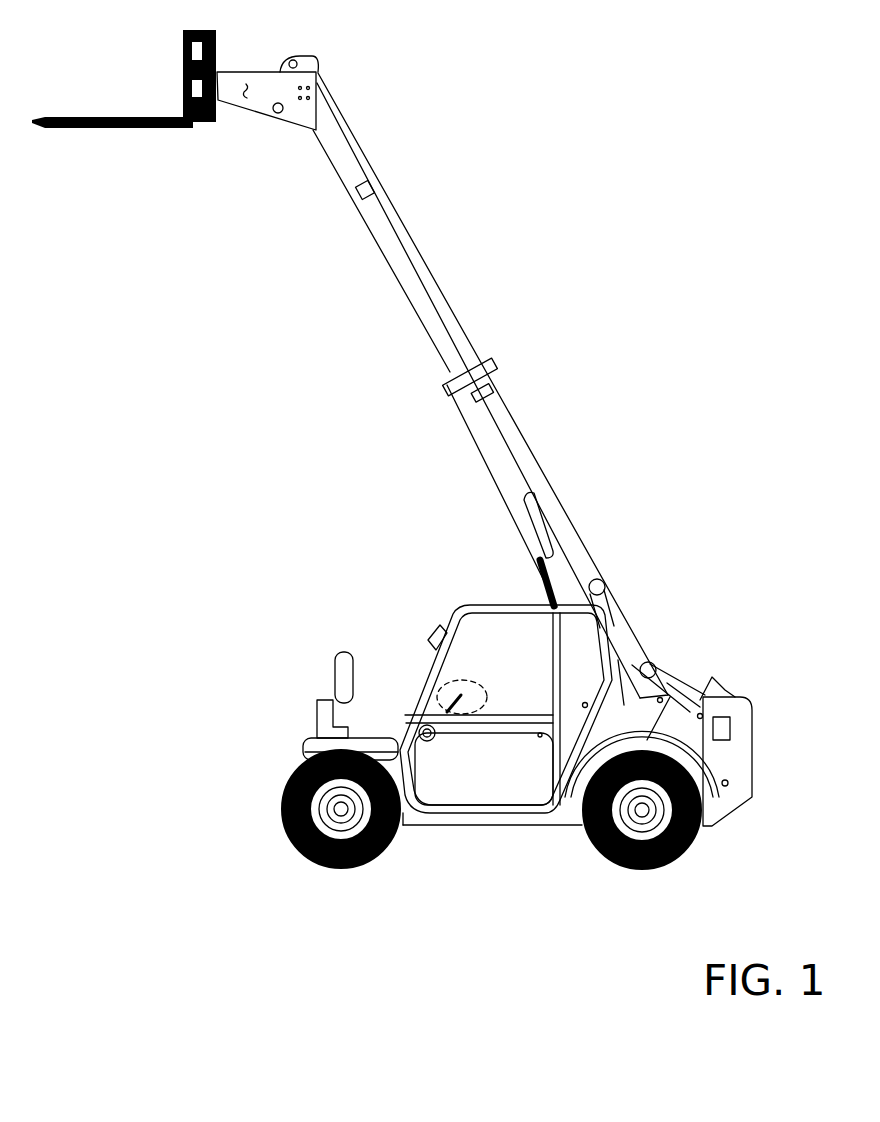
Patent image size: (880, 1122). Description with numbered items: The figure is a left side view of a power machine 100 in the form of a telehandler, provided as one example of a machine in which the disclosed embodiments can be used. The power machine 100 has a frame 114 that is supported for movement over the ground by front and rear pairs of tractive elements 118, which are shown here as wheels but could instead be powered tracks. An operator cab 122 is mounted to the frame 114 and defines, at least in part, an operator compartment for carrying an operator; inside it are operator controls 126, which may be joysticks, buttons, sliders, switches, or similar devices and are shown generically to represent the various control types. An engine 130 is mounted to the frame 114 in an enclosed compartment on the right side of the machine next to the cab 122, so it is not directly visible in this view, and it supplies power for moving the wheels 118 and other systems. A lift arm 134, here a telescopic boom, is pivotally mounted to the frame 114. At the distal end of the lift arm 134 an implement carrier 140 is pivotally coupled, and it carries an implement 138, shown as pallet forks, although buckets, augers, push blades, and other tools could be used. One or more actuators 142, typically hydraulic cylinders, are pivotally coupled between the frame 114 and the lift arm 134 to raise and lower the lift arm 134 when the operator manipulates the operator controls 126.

The power machine 100 is at (594, 420).
The frame 114 is at (421, 817).
The tractive elements 118 is at (327, 868).
The operator cab 122 is at (502, 610).
The operator controls 126 is at (447, 705).
The engine 130 is at (660, 637).
The lift arm 134 is at (538, 473).
The implement 138 is at (130, 127).
The implement carrier 140 is at (218, 47).
The actuators 142 is at (538, 576).